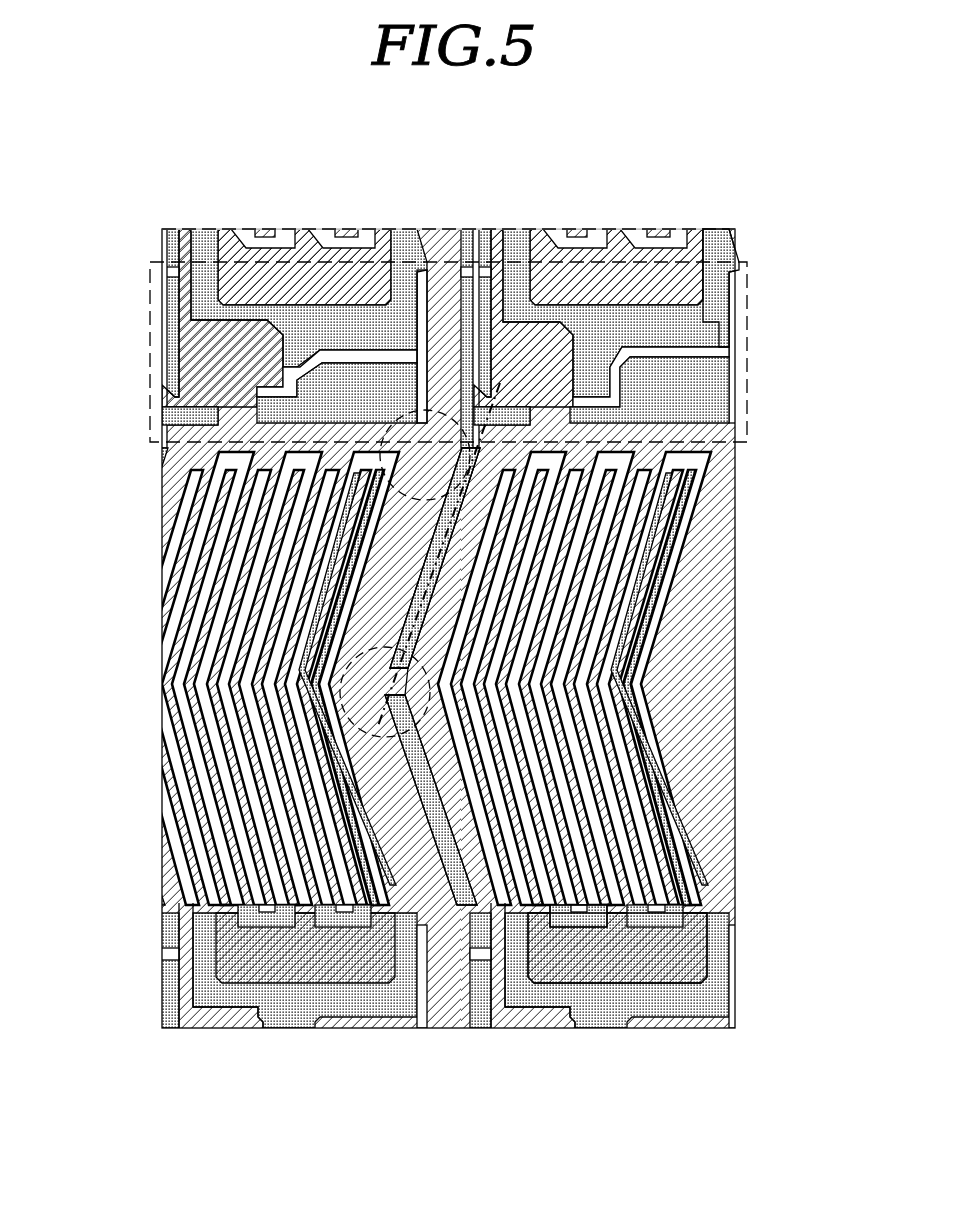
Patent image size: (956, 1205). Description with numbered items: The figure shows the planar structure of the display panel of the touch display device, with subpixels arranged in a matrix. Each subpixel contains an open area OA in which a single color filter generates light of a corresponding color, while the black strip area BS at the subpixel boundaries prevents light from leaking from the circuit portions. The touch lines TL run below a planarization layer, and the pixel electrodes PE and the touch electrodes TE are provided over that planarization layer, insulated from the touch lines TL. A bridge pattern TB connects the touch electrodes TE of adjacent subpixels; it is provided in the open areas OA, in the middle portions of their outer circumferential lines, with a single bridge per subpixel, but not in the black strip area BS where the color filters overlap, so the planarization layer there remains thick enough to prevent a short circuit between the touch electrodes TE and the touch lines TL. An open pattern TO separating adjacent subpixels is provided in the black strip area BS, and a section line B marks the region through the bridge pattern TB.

The open pattern TO is at (395, 402).
The black strip area BS is at (147, 349).
The touch electrode TE is at (707, 424).
The bridge pattern TB is at (352, 636).
The touch line TL is at (430, 787).
The open area OA is at (617, 930).
The pixel electrode PE is at (668, 958).
The section line B-B' B is at (430, 556).